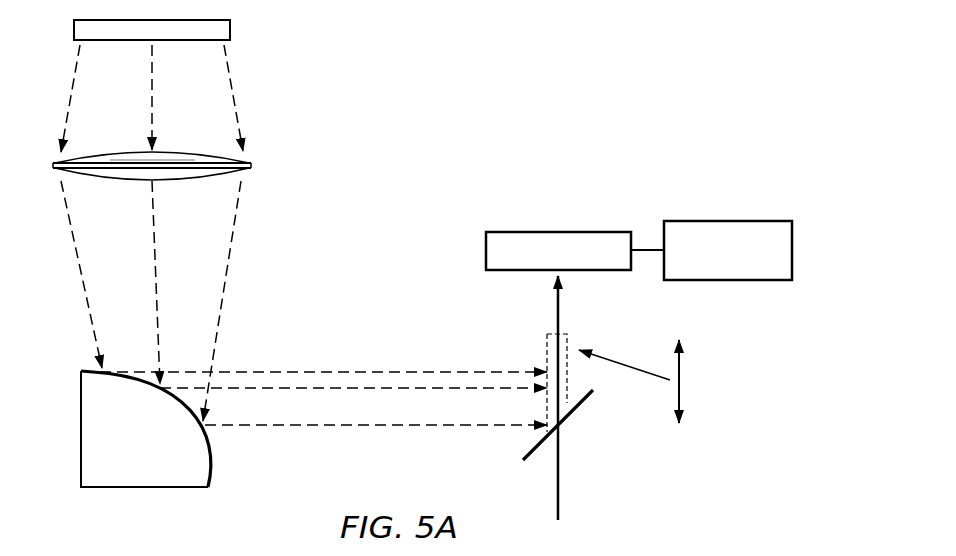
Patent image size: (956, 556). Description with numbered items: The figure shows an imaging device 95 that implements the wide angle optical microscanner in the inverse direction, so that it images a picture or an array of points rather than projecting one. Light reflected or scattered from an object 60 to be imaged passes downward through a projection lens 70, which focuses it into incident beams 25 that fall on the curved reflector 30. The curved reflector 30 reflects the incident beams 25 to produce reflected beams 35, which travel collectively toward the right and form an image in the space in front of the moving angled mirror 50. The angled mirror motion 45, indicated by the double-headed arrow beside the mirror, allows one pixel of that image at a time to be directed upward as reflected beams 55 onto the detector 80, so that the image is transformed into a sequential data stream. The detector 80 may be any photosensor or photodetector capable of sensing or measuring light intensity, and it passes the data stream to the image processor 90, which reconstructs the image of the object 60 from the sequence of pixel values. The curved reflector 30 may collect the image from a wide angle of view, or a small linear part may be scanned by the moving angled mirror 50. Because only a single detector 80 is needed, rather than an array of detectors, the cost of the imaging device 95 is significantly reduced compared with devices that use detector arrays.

The incident beams 25 is at (78, 252).
The curved reflector 30 is at (213, 463).
The reflected beams 35 is at (365, 371).
The angled mirror motion 45 is at (682, 388).
The moving angled mirror 50 is at (578, 405).
The reflected beams 55 is at (559, 310).
The object 60 is at (74, 32).
The projection lens 70 is at (53, 165).
The detector 80 is at (568, 232).
The image processor 90 is at (744, 221).
The imaging device 95 is at (420, 110).